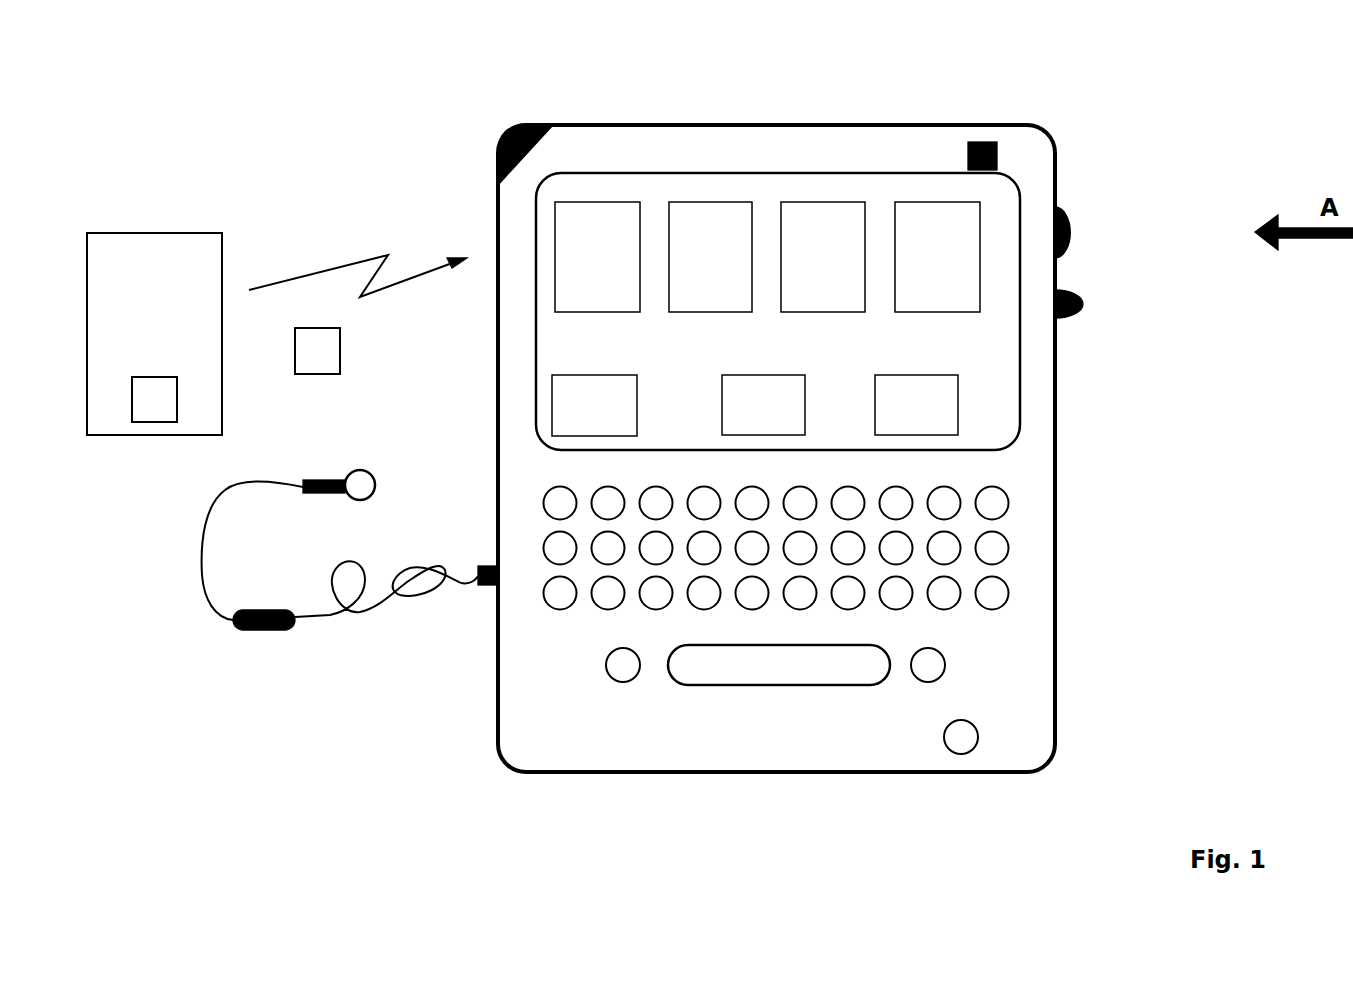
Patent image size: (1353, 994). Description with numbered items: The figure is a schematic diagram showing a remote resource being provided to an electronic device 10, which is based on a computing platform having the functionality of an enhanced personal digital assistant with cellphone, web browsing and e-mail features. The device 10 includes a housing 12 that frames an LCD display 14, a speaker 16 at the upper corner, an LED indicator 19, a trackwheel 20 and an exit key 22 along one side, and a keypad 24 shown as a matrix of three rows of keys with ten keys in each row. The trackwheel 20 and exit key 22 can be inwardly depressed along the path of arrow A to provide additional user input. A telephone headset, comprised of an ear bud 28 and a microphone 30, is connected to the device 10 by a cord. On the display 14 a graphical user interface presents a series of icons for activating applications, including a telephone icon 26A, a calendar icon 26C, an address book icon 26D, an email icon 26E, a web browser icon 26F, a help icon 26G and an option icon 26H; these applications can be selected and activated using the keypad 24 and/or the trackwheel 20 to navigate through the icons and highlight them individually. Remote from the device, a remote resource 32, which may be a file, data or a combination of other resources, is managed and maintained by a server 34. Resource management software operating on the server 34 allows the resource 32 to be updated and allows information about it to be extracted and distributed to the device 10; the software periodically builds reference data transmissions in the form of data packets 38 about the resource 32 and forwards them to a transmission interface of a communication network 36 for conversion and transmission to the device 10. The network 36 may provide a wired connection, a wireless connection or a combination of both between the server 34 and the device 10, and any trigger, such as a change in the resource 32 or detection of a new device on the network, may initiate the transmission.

The electronic device 10 is at (670, 775).
The housing 12 is at (900, 748).
The LCD display 14 is at (1000, 362).
The speaker 16 is at (483, 147).
The LED indicator 19 is at (1010, 150).
The trackwheel 20 is at (1088, 231).
The exit key 22 is at (1093, 305).
The keypad 24 is at (1010, 548).
The telephone icon 26A is at (597, 281).
The calendar icon 26C is at (710, 281).
The address book icon 26D is at (945, 281).
The email icon 26E is at (823, 281).
The web browser icon 26F is at (629, 405).
The help icon 26G is at (788, 405).
The option icon 26H is at (947, 405).
The ear bud 28 is at (375, 465).
The microphone 30 is at (265, 596).
The remote resource 32 is at (152, 422).
The server 34 is at (110, 233).
The communication network 36 is at (358, 263).
The data packets 38 is at (315, 374).